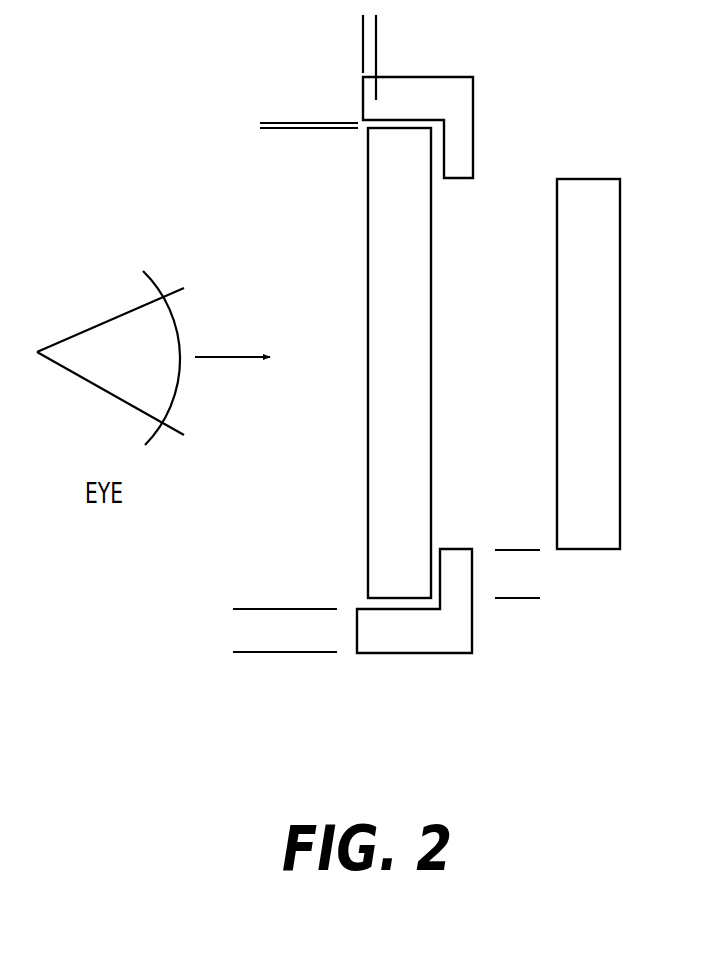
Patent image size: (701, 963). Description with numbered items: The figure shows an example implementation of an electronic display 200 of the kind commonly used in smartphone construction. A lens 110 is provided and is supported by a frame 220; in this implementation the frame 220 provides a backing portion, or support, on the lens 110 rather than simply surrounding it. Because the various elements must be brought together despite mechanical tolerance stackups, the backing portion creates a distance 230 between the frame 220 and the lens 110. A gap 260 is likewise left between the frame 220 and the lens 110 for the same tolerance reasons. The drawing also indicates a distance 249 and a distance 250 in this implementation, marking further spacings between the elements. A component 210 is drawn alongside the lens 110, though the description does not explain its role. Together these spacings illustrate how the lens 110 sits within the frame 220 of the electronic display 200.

The lens 110 is at (432, 328).
The electronic display 200 is at (608, 172).
The display element 210 is at (416, 363).
The frame 220 is at (473, 144).
The distance 230 is at (293, 44).
The distance 249 is at (252, 533).
The distance 250 is at (509, 480).
The gap 260 is at (280, 185).